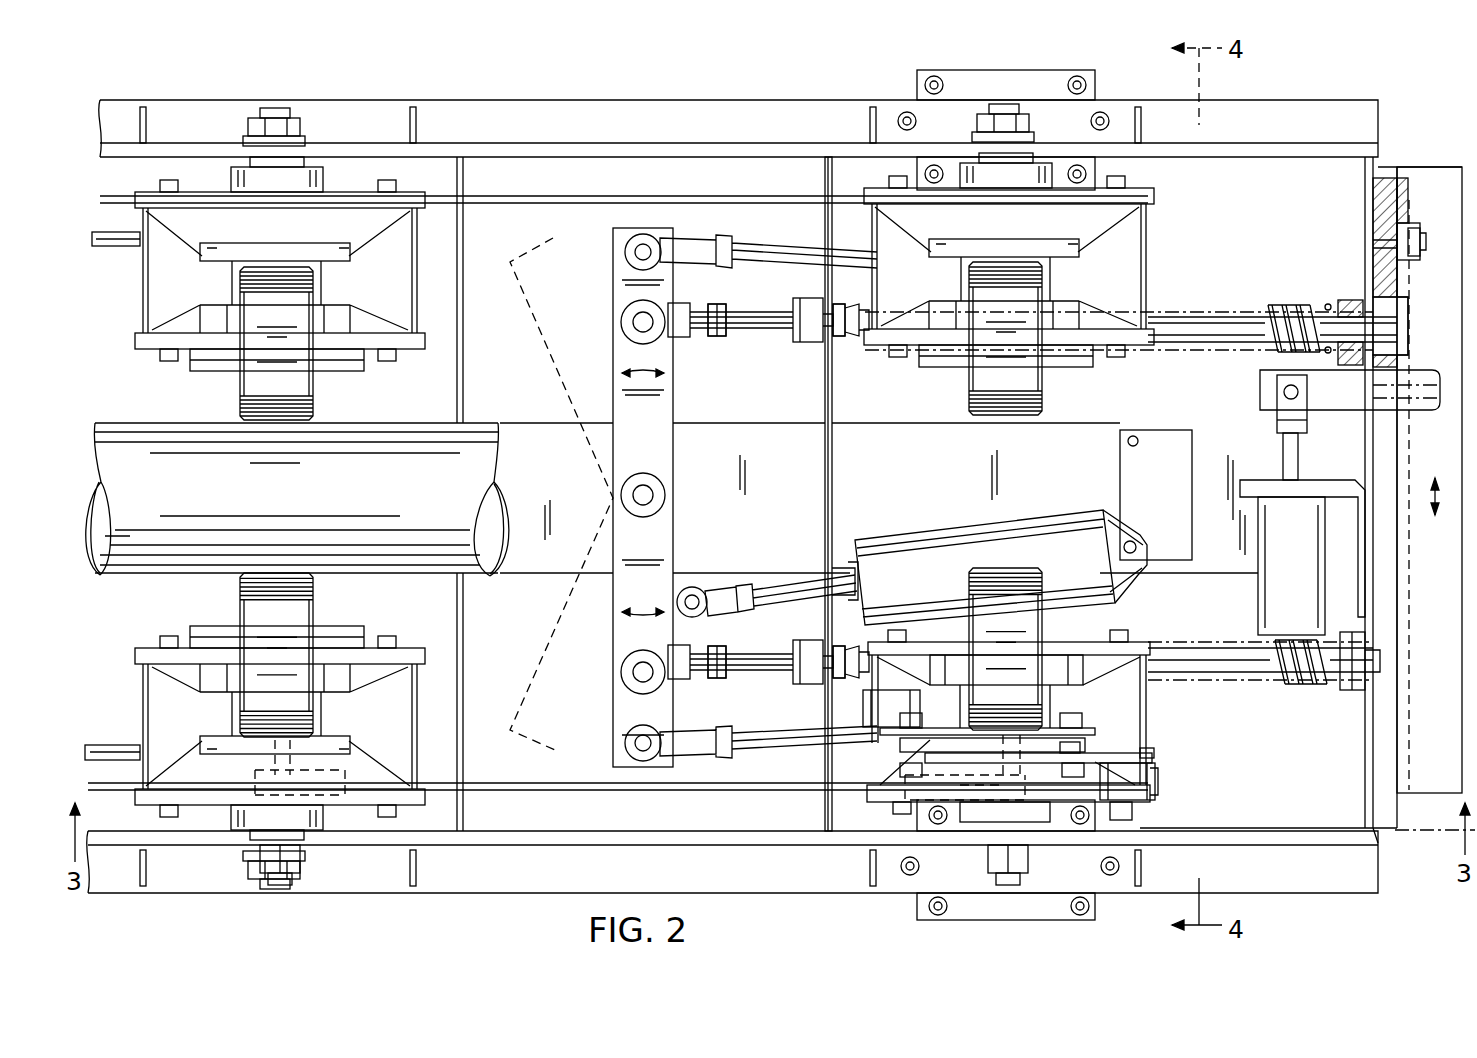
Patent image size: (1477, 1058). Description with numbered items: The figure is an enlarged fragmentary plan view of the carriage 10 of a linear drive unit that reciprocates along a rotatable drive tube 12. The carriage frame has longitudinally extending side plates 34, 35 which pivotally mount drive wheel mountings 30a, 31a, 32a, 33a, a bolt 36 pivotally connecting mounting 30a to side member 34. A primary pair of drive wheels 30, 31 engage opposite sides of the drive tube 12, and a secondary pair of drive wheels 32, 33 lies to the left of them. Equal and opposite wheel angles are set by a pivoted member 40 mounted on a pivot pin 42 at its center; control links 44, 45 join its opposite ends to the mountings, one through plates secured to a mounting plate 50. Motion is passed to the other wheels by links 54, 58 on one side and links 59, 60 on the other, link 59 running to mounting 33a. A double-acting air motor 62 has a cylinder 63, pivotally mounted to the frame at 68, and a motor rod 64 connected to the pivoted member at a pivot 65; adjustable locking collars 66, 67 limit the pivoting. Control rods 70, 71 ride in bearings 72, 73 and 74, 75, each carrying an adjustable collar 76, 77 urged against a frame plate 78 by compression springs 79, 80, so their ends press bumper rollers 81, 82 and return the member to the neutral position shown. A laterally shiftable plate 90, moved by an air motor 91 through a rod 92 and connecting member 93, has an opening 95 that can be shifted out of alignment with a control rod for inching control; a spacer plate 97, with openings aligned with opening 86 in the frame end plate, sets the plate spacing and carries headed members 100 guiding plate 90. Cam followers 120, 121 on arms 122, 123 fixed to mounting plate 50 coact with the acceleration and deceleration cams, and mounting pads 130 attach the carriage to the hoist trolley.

The carriage 10 is at (520, 85).
The drive tube 12 is at (373, 440).
The drive wheel 30 is at (1003, 578).
The drive wheel mounting 30a is at (1148, 698).
The drive wheel 31 is at (1042, 405).
The drive wheel mounting 31a is at (1148, 198).
The drive wheel 32 is at (300, 618).
The drive wheel mounting 32a is at (405, 720).
The drive wheel 33 is at (260, 387).
The drive wheel mounting 33a is at (400, 300).
The side plate 34 is at (720, 835).
The side plate 35 is at (727, 150).
The bolt 36 is at (283, 885).
The pivoted member 40 is at (650, 415).
The pivot pin 42 is at (653, 495).
The control link 44 is at (745, 738).
The control link 45 is at (762, 262).
The mounting plate 50 is at (1088, 752).
The link 54 is at (553, 788).
The link 58 is at (122, 746).
The link 59 is at (610, 203).
The link 60 is at (118, 246).
The double-acting air motor 62 is at (942, 540).
The motor cylinder 63 is at (880, 540).
The motor rod 64 is at (790, 580).
The pivot 65 is at (692, 595).
The adjustable locking collar 66 is at (717, 684).
The adjustable locking collar 67 is at (720, 352).
The pivotal mounting 68 is at (1132, 545).
The control rod 70 is at (1290, 683).
The control rod 71 is at (1182, 328).
The bearing 72 is at (803, 640).
The bearing 73 is at (1352, 700).
The bearing 74 is at (808, 303).
The bearing 75 is at (1345, 300).
The adjustable collar 76 is at (842, 618).
The adjustable collar 77 is at (845, 355).
The frame plate 78 is at (834, 437).
The compression spring 79 is at (1270, 648).
The compression spring 80 is at (1290, 308).
The bumper roller 81 is at (622, 678).
The bumper roller 82 is at (621, 322).
The opening 86 is at (1373, 325).
The laterally shiftable plate 90 is at (1445, 578).
The air motor 91 is at (1305, 562).
The rod 92 is at (1298, 452).
The connecting member 93 is at (1423, 400).
The opening 95 is at (1400, 320).
The spacer plate 97 is at (1383, 185).
The member with enlarged head 100 is at (1410, 235).
The cam follower 120 is at (870, 712).
The cam follower 121 is at (1158, 788).
The arm 122 is at (1068, 742).
The arm 123 is at (1152, 755).
The mounting pad 130 is at (1045, 78).